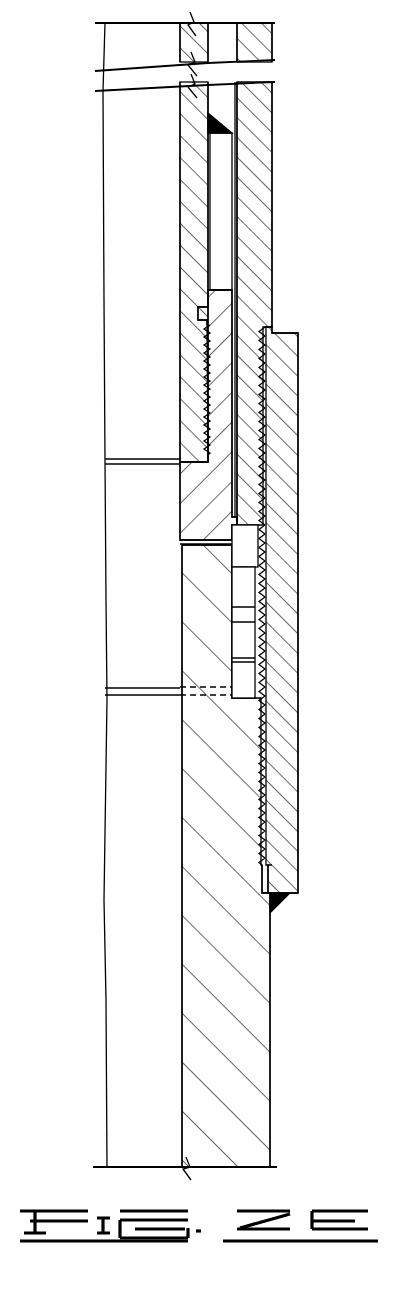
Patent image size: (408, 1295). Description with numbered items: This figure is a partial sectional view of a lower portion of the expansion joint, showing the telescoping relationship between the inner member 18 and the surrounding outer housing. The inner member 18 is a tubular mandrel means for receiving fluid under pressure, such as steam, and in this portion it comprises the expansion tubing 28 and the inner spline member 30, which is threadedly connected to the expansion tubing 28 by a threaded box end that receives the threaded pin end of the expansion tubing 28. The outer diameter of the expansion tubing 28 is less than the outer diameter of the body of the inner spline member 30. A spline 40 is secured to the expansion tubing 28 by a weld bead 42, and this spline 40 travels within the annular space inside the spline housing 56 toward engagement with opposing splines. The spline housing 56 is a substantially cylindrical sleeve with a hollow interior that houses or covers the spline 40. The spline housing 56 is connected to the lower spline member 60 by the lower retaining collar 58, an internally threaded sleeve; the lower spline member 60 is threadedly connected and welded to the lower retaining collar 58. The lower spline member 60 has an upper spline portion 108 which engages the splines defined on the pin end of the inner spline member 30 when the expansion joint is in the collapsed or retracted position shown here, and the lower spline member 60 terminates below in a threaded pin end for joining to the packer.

The inner member 18 is at (117, 698).
The expansion tubing 28 is at (186, 215).
The inner spline member 30 is at (190, 491).
The spline 40 is at (222, 223).
The weld bead 42 is at (225, 127).
The spline housing 56 is at (257, 281).
The lower retaining collar 58 is at (284, 559).
The lower spline member 60 is at (253, 993).
The upper spline portion 108 is at (215, 639).